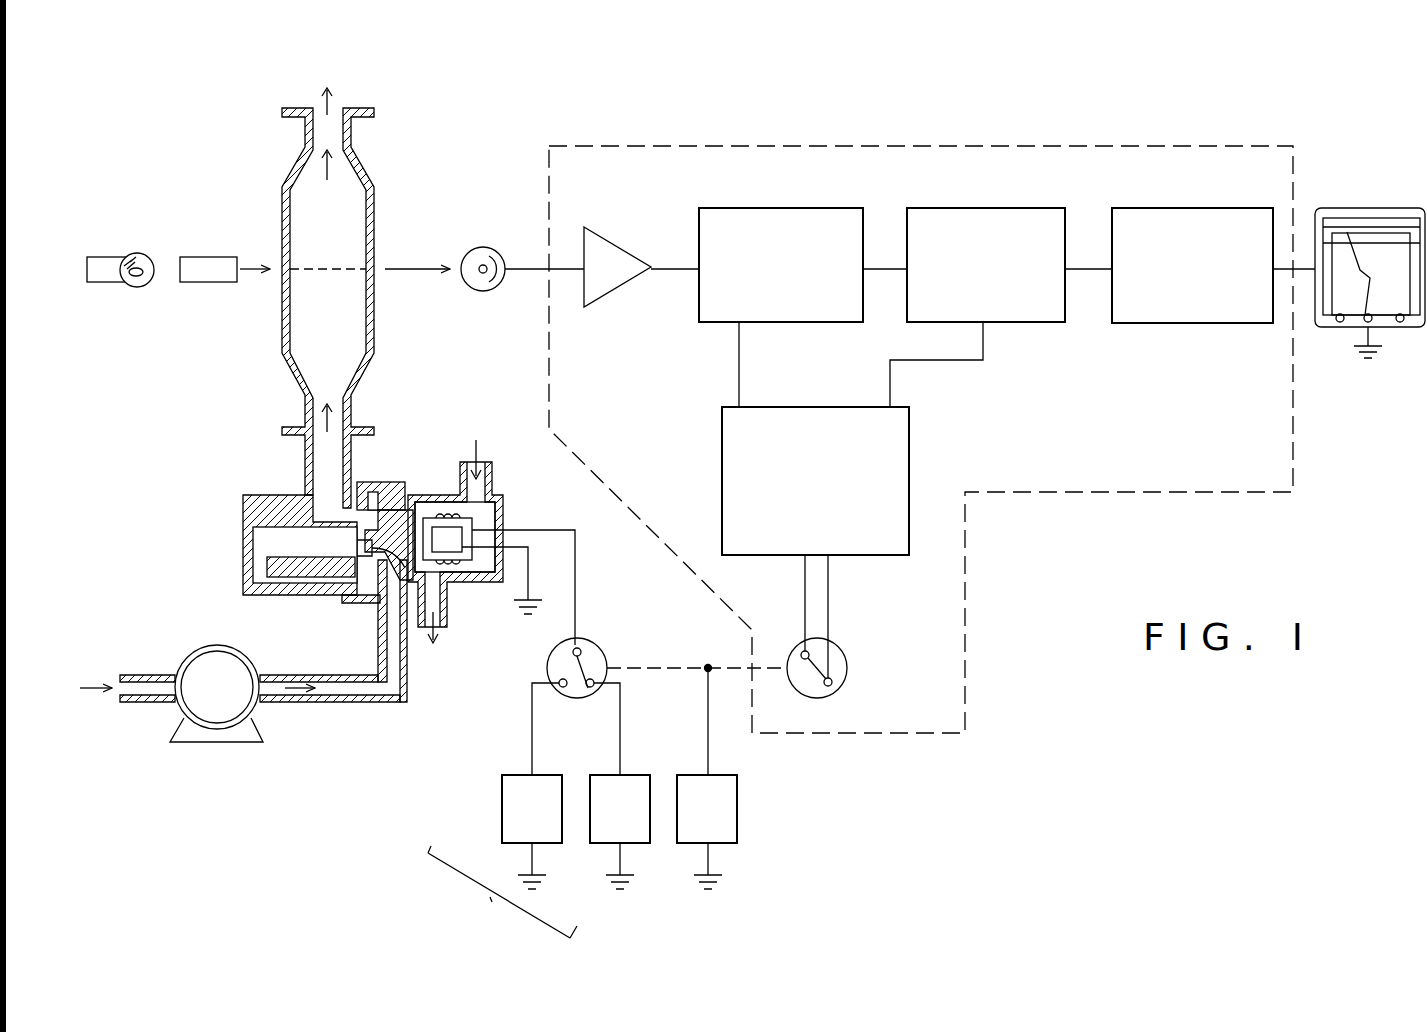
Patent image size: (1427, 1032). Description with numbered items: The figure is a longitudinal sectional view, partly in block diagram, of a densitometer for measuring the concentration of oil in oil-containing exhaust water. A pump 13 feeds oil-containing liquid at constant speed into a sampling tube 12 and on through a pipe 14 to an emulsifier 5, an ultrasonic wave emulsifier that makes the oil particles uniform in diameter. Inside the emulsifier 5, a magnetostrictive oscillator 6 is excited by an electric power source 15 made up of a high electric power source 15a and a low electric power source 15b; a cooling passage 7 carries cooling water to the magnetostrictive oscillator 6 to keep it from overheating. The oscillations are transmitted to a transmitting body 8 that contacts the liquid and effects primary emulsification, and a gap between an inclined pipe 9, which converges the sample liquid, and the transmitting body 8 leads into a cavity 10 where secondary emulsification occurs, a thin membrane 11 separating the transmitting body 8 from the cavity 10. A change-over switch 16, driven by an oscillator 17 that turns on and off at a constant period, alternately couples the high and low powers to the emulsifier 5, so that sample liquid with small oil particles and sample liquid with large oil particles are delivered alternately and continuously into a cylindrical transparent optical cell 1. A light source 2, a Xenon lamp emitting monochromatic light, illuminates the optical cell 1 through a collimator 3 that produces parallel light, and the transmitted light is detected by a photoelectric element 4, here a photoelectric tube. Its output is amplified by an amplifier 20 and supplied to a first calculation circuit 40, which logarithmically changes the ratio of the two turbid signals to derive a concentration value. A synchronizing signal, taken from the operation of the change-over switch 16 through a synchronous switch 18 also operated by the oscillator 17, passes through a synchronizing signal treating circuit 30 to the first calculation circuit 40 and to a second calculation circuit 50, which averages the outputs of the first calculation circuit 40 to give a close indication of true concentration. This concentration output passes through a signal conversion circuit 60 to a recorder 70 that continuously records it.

The optical cell 1 is at (376, 205).
The light source 2 is at (118, 233).
The collimator 3 is at (207, 257).
The photoelectric element 4 is at (483, 247).
The emulsifier 5 is at (411, 481).
The magnetostrictive oscillator 6 is at (465, 562).
The cooling passage 7 is at (485, 570).
The transmitting body 8 is at (423, 523).
The inclined pipe 9 is at (374, 600).
The cavity 10 is at (272, 542).
The thin membrane 11 is at (353, 565).
The sampling tube 12 is at (145, 700).
The pump 13 is at (245, 628).
The pipe 14 is at (348, 702).
The electric power source 15 is at (490, 897).
The high electric power source 15a is at (502, 824).
The low electric power source 15b is at (600, 845).
The change-over switch 16 is at (600, 654).
The oscillator 17 is at (737, 825).
The synchronous switch 18 is at (845, 653).
The amplifier 20 is at (618, 245).
The synchronizing signal treating circuit 30 is at (799, 407).
The first calculation circuit 40 is at (810, 208).
The second calculation circuit 50 is at (1022, 208).
The signal conversion circuit 60 is at (1225, 208).
The recorder 70 is at (1378, 208).